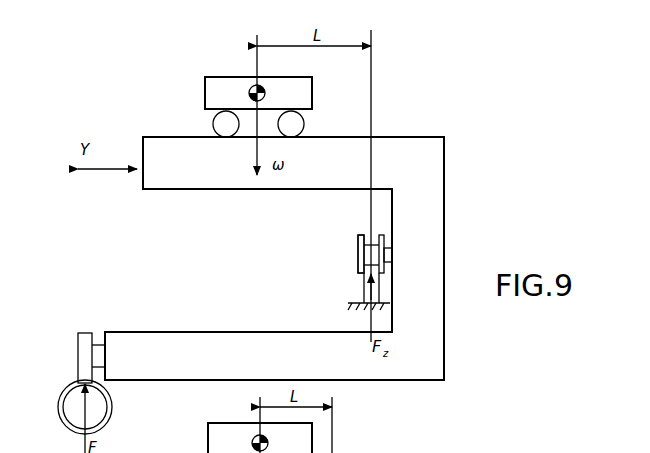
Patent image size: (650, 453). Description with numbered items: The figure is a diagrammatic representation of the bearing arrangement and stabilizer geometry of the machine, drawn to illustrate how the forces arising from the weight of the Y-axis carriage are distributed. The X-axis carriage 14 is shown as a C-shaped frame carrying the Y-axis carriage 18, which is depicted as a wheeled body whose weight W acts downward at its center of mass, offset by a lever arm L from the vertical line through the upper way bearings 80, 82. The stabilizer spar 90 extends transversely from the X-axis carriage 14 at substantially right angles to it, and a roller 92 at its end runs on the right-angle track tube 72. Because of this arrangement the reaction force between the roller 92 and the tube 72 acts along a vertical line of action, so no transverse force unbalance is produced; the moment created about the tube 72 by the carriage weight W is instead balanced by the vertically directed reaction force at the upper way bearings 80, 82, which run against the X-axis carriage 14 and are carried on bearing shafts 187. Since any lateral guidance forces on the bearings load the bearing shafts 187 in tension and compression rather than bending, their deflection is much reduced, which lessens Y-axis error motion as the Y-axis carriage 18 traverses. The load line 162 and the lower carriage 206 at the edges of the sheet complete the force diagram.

The X-axis carriage 14 is at (445, 200).
The Y-axis carriage 18 is at (205, 96).
The load line 162 is at (216, 87).
The upper way bearing 80 is at (358, 251).
The upper way bearing 82 is at (361, 254).
The bearing shaft 187 is at (393, 258).
The roller 92 is at (88, 332).
The lower beam 90 is at (195, 332).
The tube 72 is at (58, 404).
The lower carriage 206 is at (208, 441).